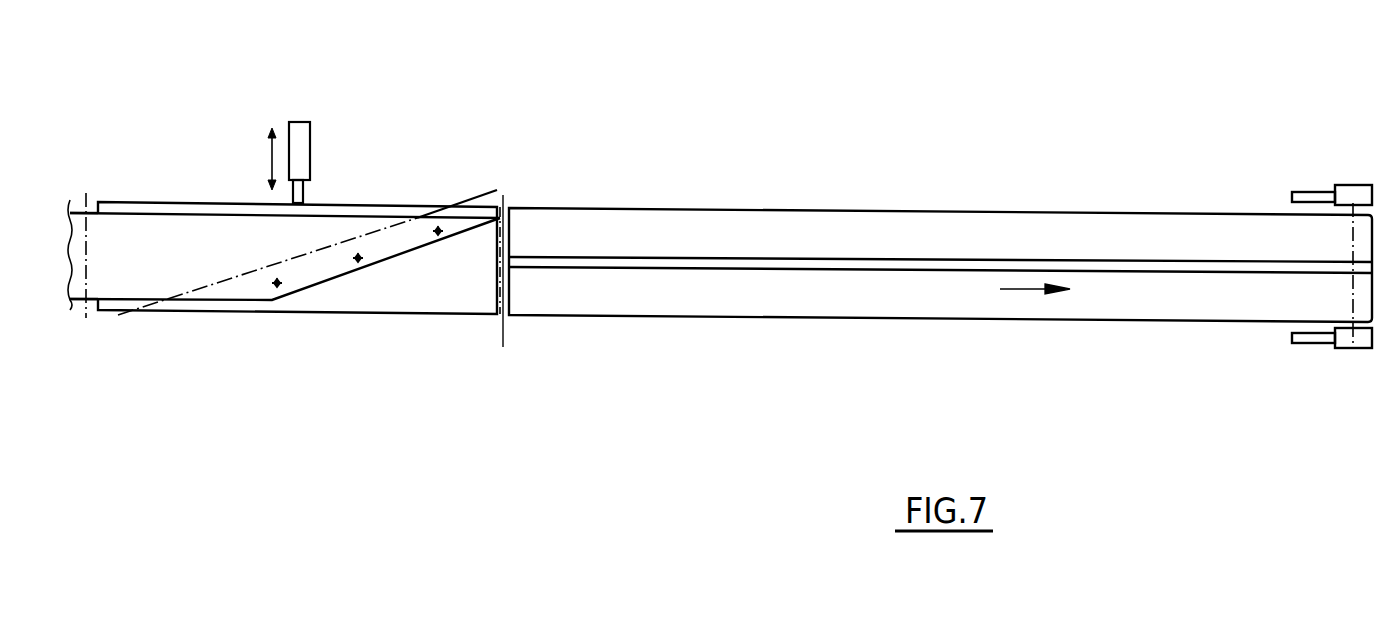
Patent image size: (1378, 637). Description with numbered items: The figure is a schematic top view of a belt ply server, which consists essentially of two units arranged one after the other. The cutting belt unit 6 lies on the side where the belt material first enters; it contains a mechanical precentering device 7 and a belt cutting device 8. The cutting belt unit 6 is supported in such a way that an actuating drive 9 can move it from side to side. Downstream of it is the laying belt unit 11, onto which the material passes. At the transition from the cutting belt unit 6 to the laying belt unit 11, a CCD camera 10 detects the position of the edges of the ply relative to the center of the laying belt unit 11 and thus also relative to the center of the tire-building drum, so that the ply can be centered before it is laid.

The cutting belt unit 6 is at (433, 295).
The mechanical precentering device 7 is at (92, 302).
The belt cutting device 8 is at (470, 198).
The actuating drive 9 is at (303, 122).
The CCD camera 10 is at (505, 333).
The laying belt unit 11 is at (835, 225).